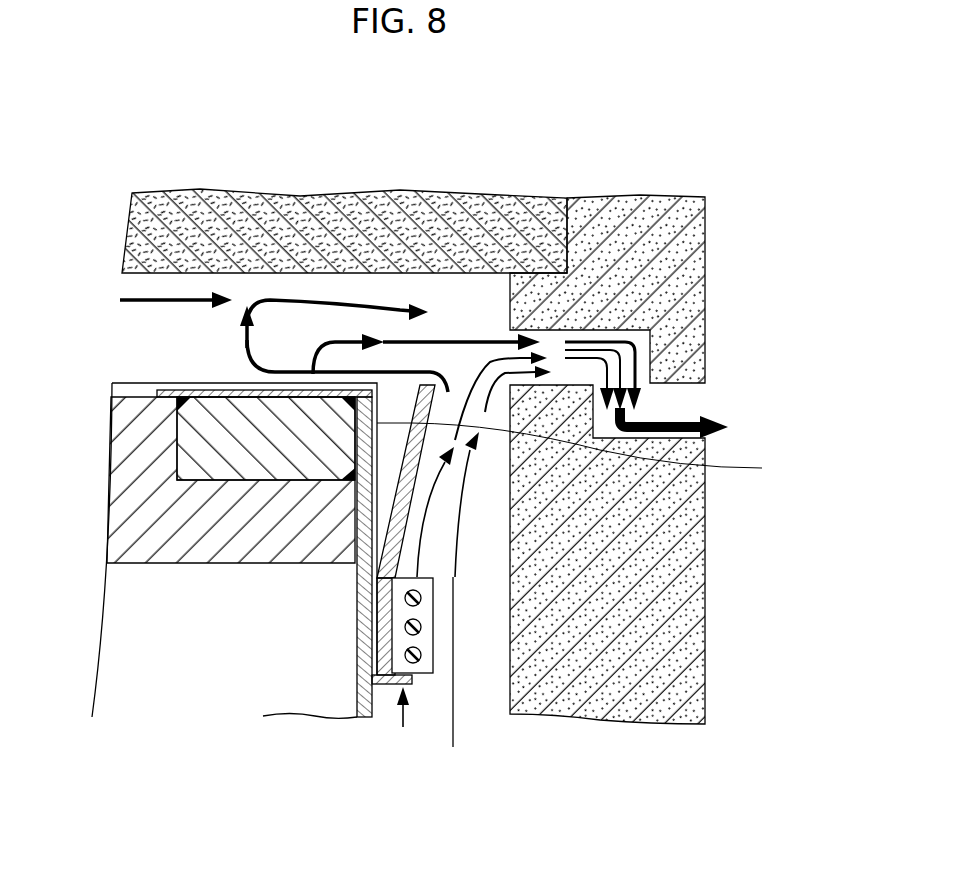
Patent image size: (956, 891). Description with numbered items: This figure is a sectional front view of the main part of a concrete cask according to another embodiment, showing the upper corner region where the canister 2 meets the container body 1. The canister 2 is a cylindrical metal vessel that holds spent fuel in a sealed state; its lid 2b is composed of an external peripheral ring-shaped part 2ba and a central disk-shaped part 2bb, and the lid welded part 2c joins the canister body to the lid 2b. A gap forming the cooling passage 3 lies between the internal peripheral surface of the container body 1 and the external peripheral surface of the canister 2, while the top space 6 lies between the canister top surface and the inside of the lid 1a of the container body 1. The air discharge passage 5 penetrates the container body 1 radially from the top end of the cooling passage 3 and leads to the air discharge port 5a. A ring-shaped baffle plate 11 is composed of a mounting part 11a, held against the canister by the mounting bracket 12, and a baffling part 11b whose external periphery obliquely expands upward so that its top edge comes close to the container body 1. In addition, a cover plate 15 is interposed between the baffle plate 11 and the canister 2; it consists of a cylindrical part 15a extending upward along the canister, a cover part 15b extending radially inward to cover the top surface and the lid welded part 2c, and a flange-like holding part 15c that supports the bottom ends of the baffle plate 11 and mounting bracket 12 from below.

The container body 1 is at (668, 521).
The lid 1a is at (308, 223).
The canister 2 is at (291, 718).
The lid 2b is at (100, 490).
The external peripheral ring-shaped part 2ba is at (217, 465).
The central disk-shaped part 2bb is at (165, 537).
The lid welded part 2c is at (183, 395).
The cooling passage 3 is at (493, 660).
The air discharge passage 5 is at (552, 345).
The air discharge port 5a is at (707, 397).
The top space 6 is at (240, 287).
The baffle plate 11 is at (410, 473).
The mounting part 11a is at (385, 638).
The baffling part 11b is at (481, 642).
The mounting bracket 12 is at (408, 613).
The cover plate 15 is at (218, 392).
The cylindrical part 15a is at (604, 411).
The cover part 15b is at (264, 393).
The holding part 15c is at (387, 687).